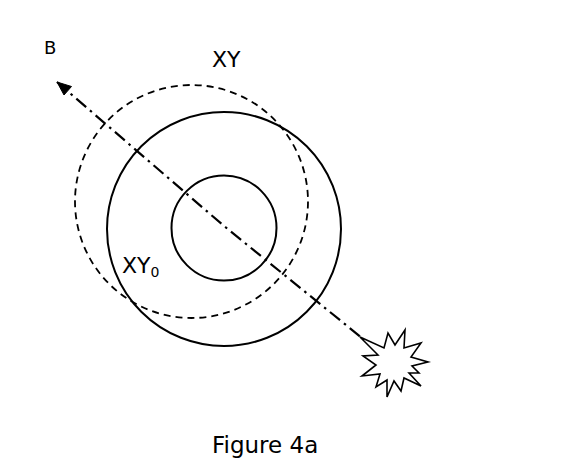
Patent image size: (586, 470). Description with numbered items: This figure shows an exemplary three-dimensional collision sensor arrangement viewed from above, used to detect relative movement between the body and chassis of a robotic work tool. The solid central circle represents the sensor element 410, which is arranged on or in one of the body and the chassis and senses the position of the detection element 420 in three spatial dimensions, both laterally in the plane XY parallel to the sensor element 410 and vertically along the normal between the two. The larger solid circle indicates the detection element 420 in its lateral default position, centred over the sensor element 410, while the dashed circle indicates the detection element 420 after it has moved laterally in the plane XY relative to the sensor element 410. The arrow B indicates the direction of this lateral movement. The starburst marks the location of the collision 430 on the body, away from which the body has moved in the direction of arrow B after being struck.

The sensor element 410 is at (273, 200).
The detection element 420 is at (266, 215).
The location of the collision 430 is at (412, 363).